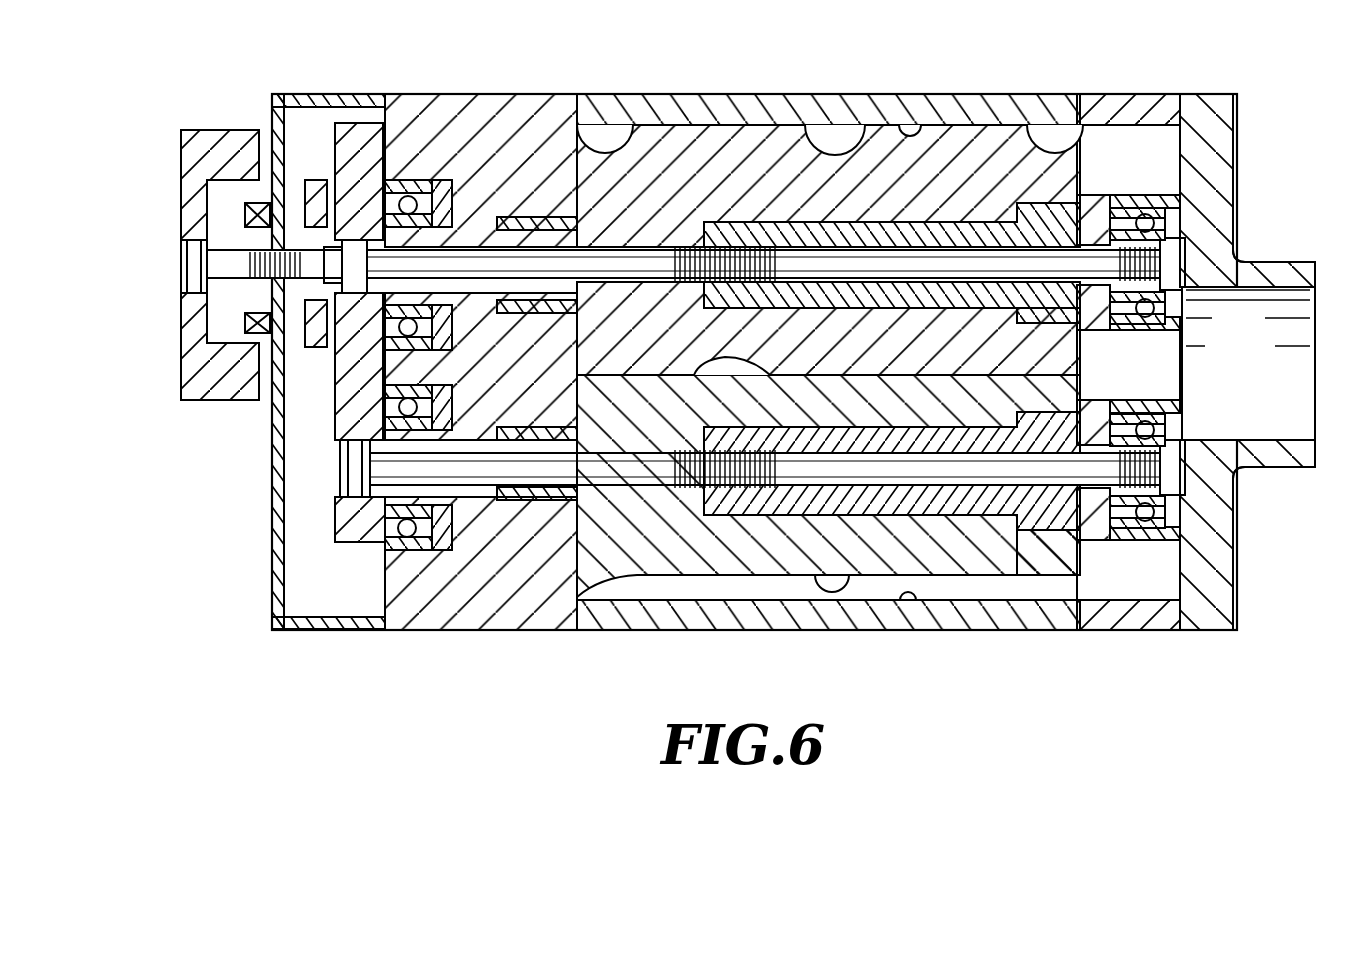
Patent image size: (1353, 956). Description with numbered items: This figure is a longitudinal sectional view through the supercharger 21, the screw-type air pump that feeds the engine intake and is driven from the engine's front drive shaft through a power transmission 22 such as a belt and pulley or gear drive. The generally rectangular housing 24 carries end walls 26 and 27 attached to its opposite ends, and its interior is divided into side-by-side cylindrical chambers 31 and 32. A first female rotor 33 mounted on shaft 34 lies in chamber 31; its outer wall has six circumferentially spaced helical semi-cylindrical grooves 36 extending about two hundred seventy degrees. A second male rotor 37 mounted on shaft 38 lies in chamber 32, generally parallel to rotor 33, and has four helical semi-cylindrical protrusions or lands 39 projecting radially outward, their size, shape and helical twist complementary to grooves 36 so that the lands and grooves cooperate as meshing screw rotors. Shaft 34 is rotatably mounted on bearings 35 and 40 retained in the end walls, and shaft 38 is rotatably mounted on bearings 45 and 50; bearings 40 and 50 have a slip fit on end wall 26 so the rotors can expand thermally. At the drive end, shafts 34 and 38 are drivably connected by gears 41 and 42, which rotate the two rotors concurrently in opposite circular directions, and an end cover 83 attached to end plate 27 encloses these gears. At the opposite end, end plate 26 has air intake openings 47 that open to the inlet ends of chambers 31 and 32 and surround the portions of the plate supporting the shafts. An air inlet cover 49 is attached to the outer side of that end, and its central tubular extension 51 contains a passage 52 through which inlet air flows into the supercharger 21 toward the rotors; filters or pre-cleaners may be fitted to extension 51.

The supercharger 21 is at (1180, 72).
The power transmission 22 is at (218, 150).
The housing 24 is at (703, 95).
The end wall 26 is at (1130, 617).
The end wall 27 is at (477, 615).
The cylindrical chamber 31 is at (903, 130).
The cylindrical chamber 32 is at (908, 592).
The first female rotor 33 is at (982, 145).
The shaft 34 is at (752, 228).
The bearing 35 is at (400, 187).
The helical semi-cylindrical grooves 36 is at (838, 148).
The second male rotor 37 is at (718, 562).
The shaft 38 is at (990, 498).
The helical semi-cylindrical protrusions or lands 39 is at (843, 583).
The bearing 40 is at (1160, 222).
The gear 41 is at (330, 150).
The gear 42 is at (355, 518).
The bearing 45 is at (385, 548).
The air intake openings 47 is at (1113, 150).
The air inlet cover 49 is at (1215, 138).
The bearing 50 is at (1160, 512).
The central tubular extension 51 is at (1287, 264).
The passage 52 is at (1258, 348).
The end cover 83 is at (272, 443).